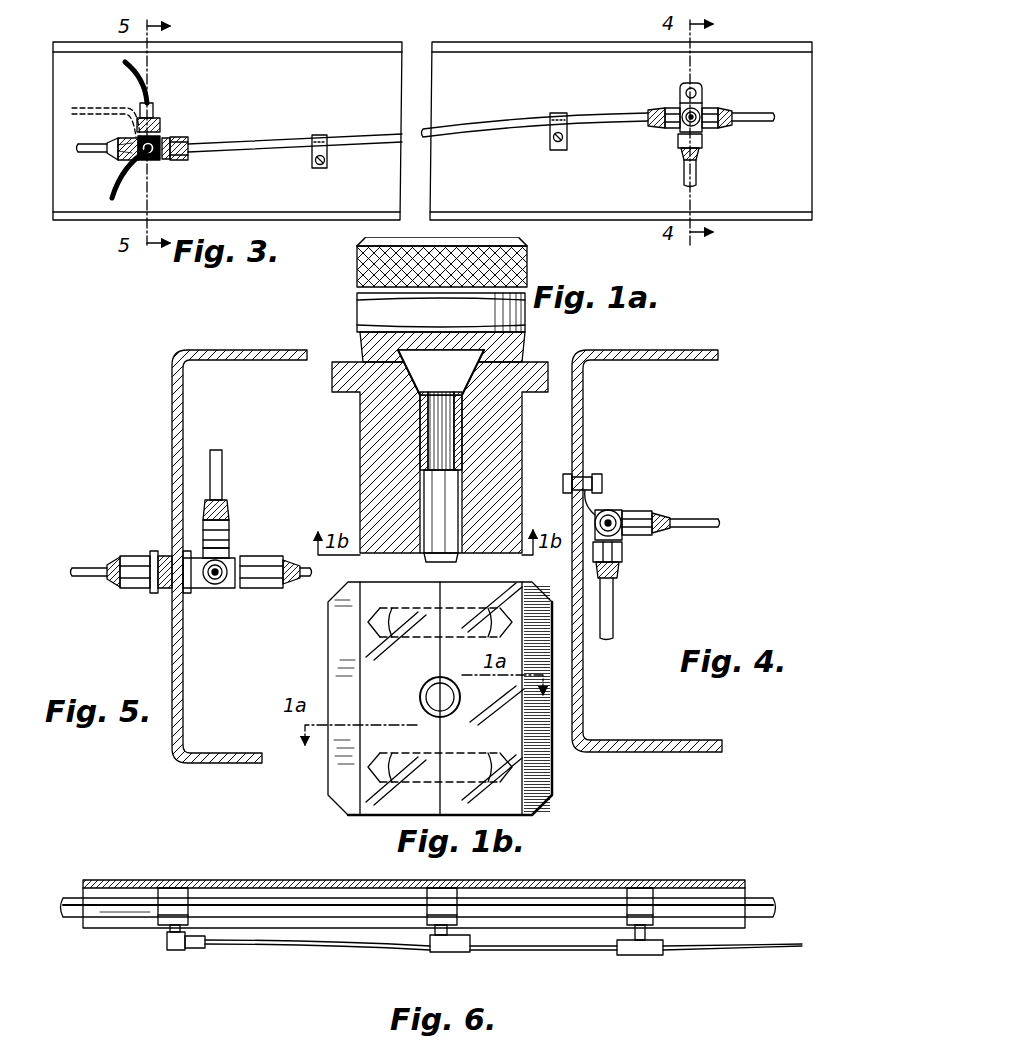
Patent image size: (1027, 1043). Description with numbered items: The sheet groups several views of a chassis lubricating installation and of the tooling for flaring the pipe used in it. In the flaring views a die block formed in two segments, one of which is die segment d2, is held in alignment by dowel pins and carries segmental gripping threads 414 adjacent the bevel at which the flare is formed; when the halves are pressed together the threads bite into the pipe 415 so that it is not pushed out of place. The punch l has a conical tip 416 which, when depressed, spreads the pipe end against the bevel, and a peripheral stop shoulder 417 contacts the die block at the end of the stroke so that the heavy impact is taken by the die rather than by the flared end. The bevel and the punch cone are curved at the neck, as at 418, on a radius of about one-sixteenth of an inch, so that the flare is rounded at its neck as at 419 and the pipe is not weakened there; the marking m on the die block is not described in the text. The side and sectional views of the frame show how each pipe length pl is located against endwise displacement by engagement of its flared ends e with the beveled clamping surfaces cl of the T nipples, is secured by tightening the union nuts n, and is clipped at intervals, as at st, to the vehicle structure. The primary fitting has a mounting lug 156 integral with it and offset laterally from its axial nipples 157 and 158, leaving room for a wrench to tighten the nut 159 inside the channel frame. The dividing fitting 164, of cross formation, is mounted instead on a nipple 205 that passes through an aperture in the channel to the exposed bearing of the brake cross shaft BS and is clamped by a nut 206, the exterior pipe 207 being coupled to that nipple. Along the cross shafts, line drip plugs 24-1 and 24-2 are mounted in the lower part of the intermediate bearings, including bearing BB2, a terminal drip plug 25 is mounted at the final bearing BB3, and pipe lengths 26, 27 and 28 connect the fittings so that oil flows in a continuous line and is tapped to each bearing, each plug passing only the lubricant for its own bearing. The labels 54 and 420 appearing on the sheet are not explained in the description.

In FIG. 3, the union nut n is at (167, 136).
In FIG. 3, the flared pipe end e is at (178, 138).
In FIG. 3, the beveled clamping surface cl is at (165, 160).
In FIG. 3, the staple or clip st is at (325, 136).
In FIG. 3, the pipe length pl is at (370, 142).
In FIG. 3, the axial nipple 157 is at (682, 104).
In FIG. 4, the axial nipple 157 is at (620, 510).
In FIG. 3, the axial nipple 158 is at (705, 106).
In FIG. 3, the nut 159 is at (658, 128).
In FIG. 1A, the punch l is at (380, 302).
In FIG. 1A, the peripheral stop shoulder 417 is at (372, 358).
In FIG. 1A, the curved neck 418 is at (418, 400).
In FIG. 1A, the conical tip 416 is at (420, 432).
In FIG. 1A, the pipe 415 is at (424, 462).
In FIG. 1B, the pipe 415 is at (427, 702).
In FIG. 1A, the rounded neck of pipe flare 419 is at (465, 400).
In FIG. 1A, the segmental gripping threads 414 is at (462, 428).
In FIG. 1B, the segmental gripping threads 414 is at (425, 688).
In FIG. 1B, the die block segment d2 is at (510, 600).
In FIG. 1B, the slot m is at (550, 763).
In FIG. 5, the dividing pipe fitting 164 is at (200, 545).
In FIG. 5, the mounting nipple 205 is at (158, 553).
In FIG. 5, the nut 206 is at (182, 592).
In FIG. 5, the exterior pipe 207 is at (86, 580).
In FIG. 4, the mounting lug 156 is at (590, 470).
In FIG. 6, the brake cross shaft BS is at (355, 907).
In FIG. 6, the final bearing BB3 is at (172, 900).
In FIG. 6, the bearing BB2 is at (455, 925).
In FIG. 6, the terminal drip plug 25 is at (176, 950).
In FIG. 6, the length of pipe 28 is at (268, 946).
In FIG. 6, the line drip plug 24-2 is at (442, 952).
In FIG. 6, the length of pipe 27 is at (572, 950).
In FIG. 6, the line drip plug 24-1 is at (650, 955).
In FIG. 6, the length of pipe 26 is at (748, 950).
In FIG. 6, the part 54 is at (226, 1022).
In FIG. 6, the part 420 is at (316, 1031).